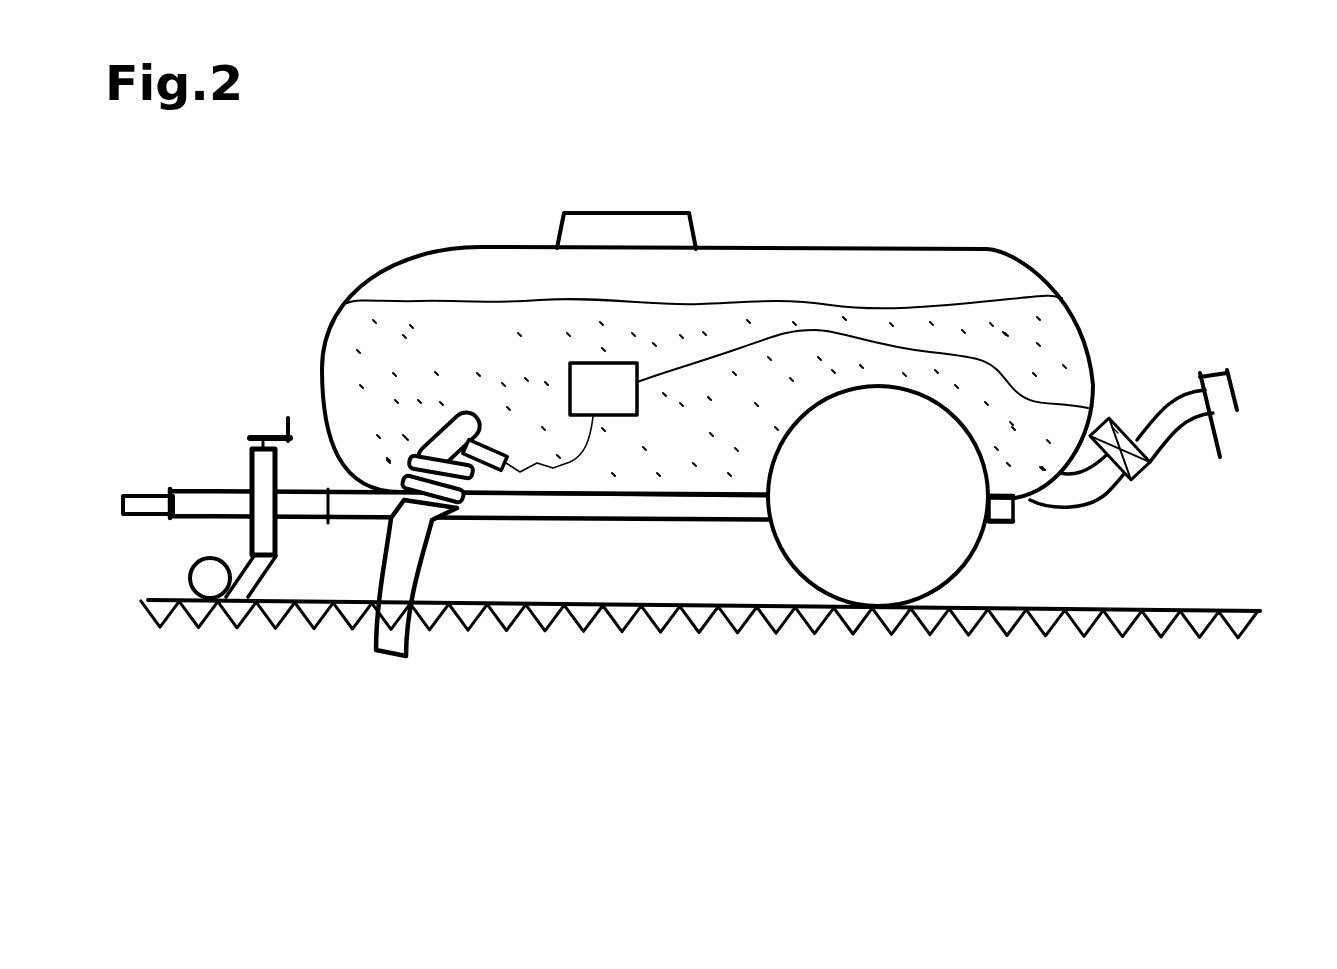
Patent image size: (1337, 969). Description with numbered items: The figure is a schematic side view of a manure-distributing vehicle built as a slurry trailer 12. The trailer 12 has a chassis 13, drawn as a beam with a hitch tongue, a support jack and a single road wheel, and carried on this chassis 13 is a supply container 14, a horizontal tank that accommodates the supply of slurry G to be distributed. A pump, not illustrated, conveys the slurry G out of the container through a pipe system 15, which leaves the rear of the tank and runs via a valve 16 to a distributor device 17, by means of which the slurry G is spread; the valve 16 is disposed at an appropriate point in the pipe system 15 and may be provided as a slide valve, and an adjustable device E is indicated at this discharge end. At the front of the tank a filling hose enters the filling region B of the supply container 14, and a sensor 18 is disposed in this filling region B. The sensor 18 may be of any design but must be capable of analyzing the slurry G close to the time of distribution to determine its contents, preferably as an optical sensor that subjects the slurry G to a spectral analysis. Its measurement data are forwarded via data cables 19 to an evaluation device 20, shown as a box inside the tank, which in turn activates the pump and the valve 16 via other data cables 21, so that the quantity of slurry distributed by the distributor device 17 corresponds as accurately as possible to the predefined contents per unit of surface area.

The slurry trailer 12 is at (567, 533).
The chassis 13 is at (703, 500).
The supply container 14 is at (790, 247).
The pipe system 15 is at (1072, 497).
The valve 16 is at (1143, 480).
The distributor device 17 is at (1217, 440).
The sensor 18 is at (477, 467).
The data cables 19 is at (580, 463).
The evaluation device 20 is at (603, 389).
The data cables 21 is at (818, 333).
The filling region B is at (422, 512).
The adjustable device E is at (1110, 427).
The slurry G is at (467, 355).